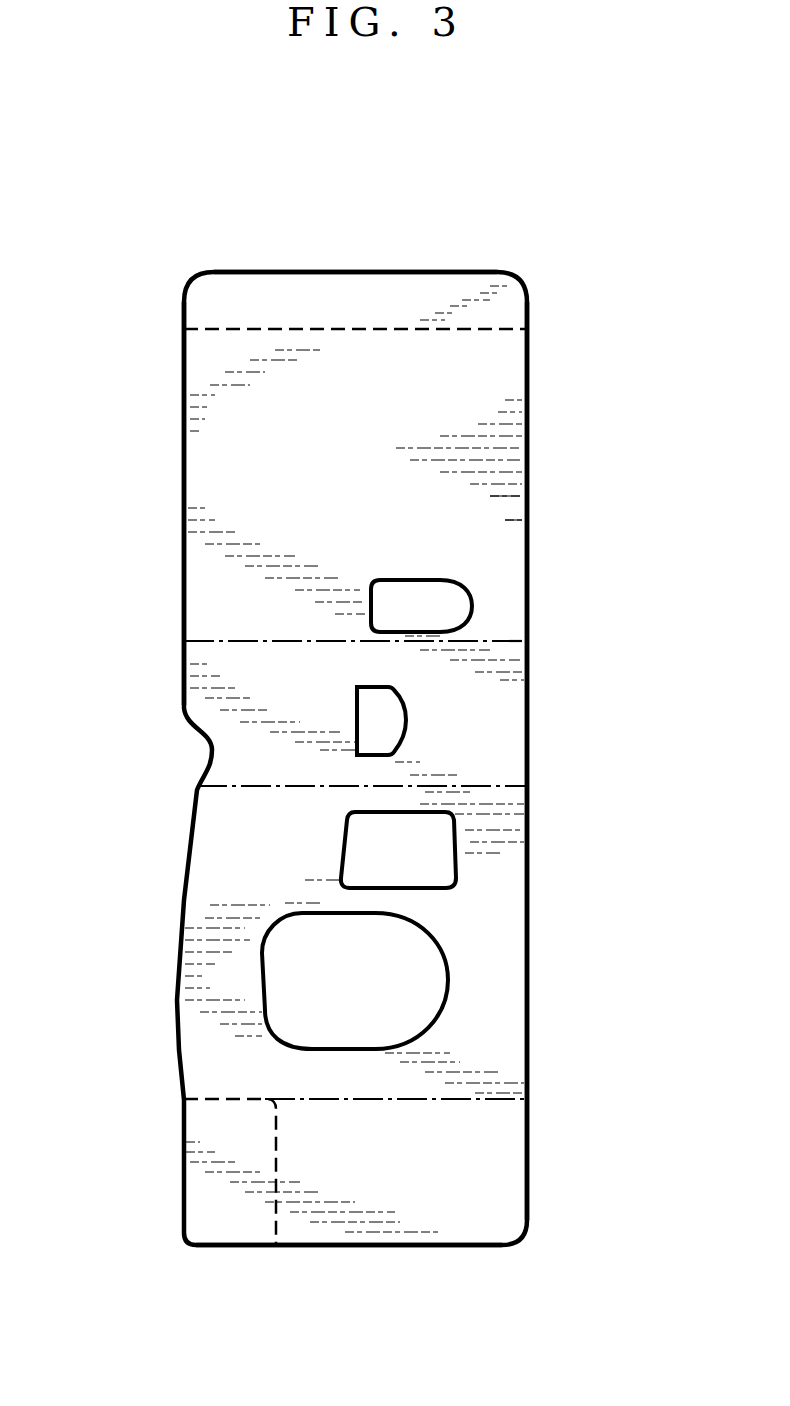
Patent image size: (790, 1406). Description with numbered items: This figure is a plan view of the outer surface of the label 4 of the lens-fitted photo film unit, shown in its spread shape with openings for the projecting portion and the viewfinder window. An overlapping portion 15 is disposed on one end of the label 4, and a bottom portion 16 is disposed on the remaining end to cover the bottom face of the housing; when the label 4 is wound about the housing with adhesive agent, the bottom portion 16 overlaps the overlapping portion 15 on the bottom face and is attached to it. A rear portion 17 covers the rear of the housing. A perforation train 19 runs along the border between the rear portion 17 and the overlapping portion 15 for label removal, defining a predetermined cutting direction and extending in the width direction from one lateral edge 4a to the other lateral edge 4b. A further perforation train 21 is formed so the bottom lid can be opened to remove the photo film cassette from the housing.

The label 4 is at (317, 272).
The lateral edge 4a is at (184, 416).
The lateral edge 4b is at (529, 417).
The overlapping portion 15 is at (438, 284).
The bottom portion 16 is at (378, 1247).
The rear portion 17 is at (510, 506).
The perforation train 19 is at (338, 332).
The perforation train 21 is at (278, 1180).